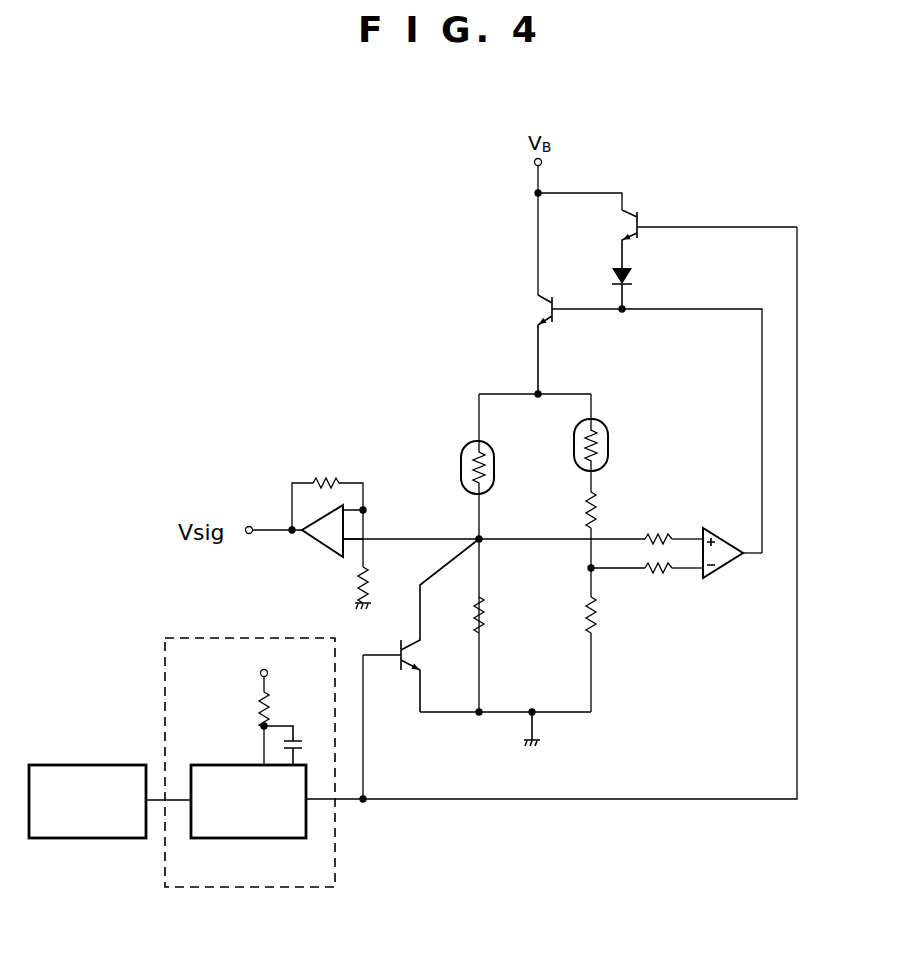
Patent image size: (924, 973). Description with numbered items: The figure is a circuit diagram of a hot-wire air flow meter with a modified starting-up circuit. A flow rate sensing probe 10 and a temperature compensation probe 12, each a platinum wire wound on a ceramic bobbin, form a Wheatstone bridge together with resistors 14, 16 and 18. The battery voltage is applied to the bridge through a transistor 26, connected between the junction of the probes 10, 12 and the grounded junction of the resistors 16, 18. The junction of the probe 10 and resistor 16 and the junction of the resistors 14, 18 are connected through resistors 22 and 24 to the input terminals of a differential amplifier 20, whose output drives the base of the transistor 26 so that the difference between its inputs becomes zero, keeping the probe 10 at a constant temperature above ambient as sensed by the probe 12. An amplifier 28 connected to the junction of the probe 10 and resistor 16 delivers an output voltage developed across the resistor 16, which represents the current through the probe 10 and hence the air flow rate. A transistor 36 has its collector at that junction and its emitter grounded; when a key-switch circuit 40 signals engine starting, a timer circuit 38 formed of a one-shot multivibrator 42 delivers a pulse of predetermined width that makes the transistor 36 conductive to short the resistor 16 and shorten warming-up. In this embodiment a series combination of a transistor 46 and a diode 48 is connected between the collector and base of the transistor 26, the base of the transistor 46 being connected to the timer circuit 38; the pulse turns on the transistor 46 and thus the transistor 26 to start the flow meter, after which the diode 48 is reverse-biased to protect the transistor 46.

The flow rate sensing probe 10 is at (461, 470).
The temperature compensation probe 12 is at (608, 441).
The resistor 14 is at (598, 506).
The resistor 16 is at (486, 620).
The resistor 18 is at (598, 620).
The differential amplifier 20 is at (727, 568).
The resistor 22 is at (658, 534).
The resistor 24 is at (658, 575).
The transistor 26 is at (556, 322).
The amplifier 28 is at (322, 546).
The transistor 36 is at (400, 672).
The timer circuit 38 is at (165, 699).
The key-switch circuit 40 is at (96, 839).
The one-shot multivibrator 42 is at (243, 839).
The transistor 46 is at (640, 219).
The diode 48 is at (632, 276).